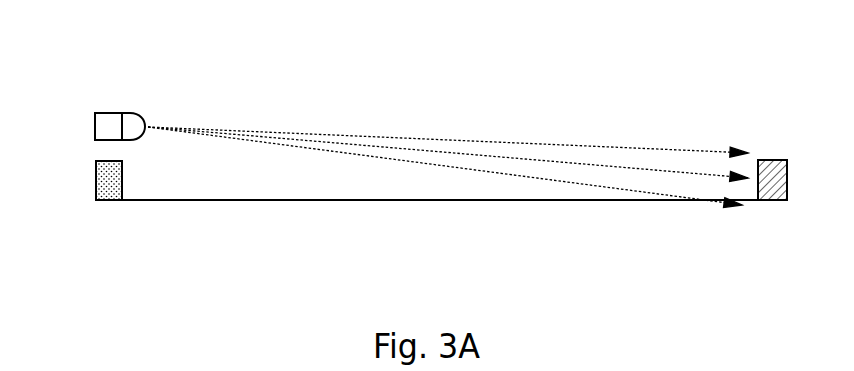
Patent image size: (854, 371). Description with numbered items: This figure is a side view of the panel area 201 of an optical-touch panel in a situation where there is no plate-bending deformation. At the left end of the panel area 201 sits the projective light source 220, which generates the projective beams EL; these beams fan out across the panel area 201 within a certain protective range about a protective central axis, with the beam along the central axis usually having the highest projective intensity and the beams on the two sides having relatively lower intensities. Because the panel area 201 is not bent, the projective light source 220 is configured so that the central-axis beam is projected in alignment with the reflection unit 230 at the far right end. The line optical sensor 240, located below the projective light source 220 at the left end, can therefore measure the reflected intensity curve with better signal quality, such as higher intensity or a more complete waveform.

The panel area 201 is at (452, 200).
The projective light source 220 is at (125, 113).
The reflection unit 230 is at (772, 160).
The line optical sensor 240 is at (96, 172).
The projective beams EL is at (605, 65).